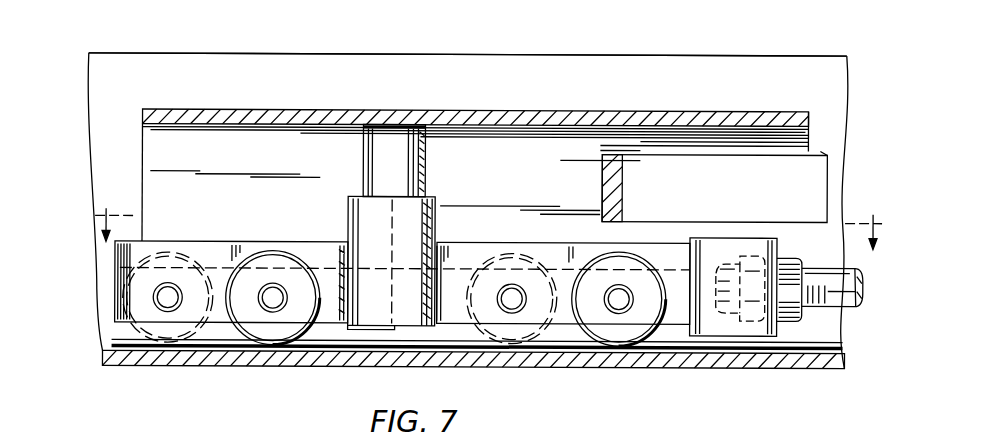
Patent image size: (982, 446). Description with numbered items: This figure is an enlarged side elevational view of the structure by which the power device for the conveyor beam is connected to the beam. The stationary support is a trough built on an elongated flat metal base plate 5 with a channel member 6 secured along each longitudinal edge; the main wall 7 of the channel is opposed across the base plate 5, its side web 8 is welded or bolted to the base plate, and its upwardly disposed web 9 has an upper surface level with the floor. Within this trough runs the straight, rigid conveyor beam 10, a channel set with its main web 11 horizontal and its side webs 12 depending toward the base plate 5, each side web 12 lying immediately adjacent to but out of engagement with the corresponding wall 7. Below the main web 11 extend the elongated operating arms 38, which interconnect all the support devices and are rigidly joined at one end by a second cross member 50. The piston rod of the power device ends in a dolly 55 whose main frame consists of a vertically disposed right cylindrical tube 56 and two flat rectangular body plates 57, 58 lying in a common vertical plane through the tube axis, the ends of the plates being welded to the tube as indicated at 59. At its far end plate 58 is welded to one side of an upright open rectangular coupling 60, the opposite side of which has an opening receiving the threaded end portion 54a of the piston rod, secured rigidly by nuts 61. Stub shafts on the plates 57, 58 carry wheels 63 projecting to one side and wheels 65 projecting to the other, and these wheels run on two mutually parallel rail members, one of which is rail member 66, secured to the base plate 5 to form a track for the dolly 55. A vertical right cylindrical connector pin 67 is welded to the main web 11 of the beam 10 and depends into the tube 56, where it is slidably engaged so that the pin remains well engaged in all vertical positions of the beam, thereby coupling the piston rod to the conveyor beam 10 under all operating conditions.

The base plate 5 is at (767, 363).
The channel member 6 is at (805, 47).
The main wall 7 is at (114, 166).
The side web 8 is at (488, 217).
The upwardly disposed web 9 is at (238, 53).
The conveyor beam 10 is at (685, 100).
The main web 11 is at (738, 113).
The side web 12 is at (214, 165).
The operating arm 38 is at (730, 178).
The second cross member 50 is at (624, 192).
The threaded end portion 54a is at (818, 304).
The dolly 55 is at (292, 232).
The tube 56 is at (437, 232).
The body plate 57 is at (213, 243).
The body plate 58 is at (584, 243).
The weld 59 is at (344, 256).
The coupling 60 is at (715, 237).
The nut 61 is at (790, 258).
The wheel 63 is at (152, 333).
The wheel 65 is at (646, 262).
The rail member 66 is at (112, 342).
The connector pin 67 is at (426, 164).